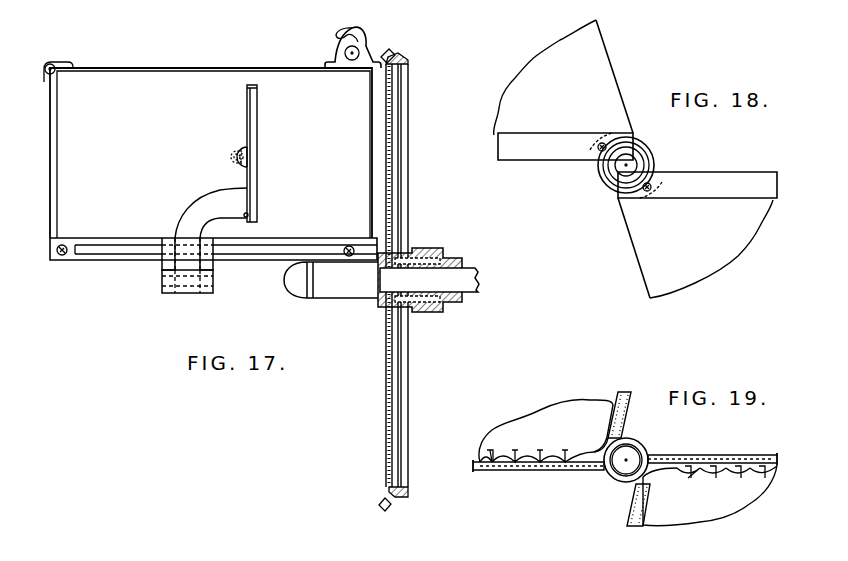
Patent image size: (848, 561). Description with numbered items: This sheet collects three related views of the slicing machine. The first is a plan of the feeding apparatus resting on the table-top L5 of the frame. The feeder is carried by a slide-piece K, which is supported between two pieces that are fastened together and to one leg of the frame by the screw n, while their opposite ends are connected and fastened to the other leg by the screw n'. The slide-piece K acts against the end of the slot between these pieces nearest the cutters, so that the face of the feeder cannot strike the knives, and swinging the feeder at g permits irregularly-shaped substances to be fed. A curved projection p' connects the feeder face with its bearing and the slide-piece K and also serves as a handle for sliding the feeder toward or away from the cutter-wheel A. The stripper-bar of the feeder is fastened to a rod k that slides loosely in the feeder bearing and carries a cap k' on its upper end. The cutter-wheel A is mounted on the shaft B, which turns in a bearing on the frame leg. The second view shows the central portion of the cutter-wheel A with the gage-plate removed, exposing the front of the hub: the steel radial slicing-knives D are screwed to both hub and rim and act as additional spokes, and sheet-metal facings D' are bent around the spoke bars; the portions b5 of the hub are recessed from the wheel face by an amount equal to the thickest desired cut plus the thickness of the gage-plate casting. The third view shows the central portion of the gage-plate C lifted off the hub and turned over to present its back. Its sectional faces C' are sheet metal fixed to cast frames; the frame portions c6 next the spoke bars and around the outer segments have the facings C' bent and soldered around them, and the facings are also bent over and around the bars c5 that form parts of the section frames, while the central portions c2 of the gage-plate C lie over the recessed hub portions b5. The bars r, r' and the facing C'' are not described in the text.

In FIG. 17, the table-top L5 is at (212, 132).
In FIG. 17, the cutter-wheel A is at (386, 280).
In FIG. 17, the shaft B is at (381, 280).
In FIG. 17, the bottom bar r is at (213, 258).
In FIG. 17, the channel in bottom bar r' is at (226, 238).
In FIG. 17, the screw n is at (60, 261).
In FIG. 17, the screw n' is at (347, 238).
In FIG. 17, the slide-piece K is at (168, 242).
In FIG. 17, the swinging point of feeder g is at (162, 283).
In FIG. 17, the curved pipe p' is at (211, 248).
In FIG. 17, the rod k is at (252, 153).
In FIG. 17, the hook arm k' is at (233, 159).
In FIG. 18, the radial slicing-knives D is at (637, 165).
In FIG. 18, the sheet-metal facings of the knife sections D' is at (633, 159).
In FIG. 18, the recessed portions of the hub b5 is at (643, 148).
In FIG. 19, the gage-plate C is at (625, 462).
In FIG. 19, the sectional faces of the gage-plate C' is at (629, 453).
In FIG. 19, the serrated lobe C'' is at (628, 463).
In FIG. 19, the central portions of the gage-plate c2 is at (598, 451).
In FIG. 19, the bars of the gage-plate frame c5 is at (473, 466).
In FIG. 19, the portions of the gage-plate frames c6 is at (622, 391).